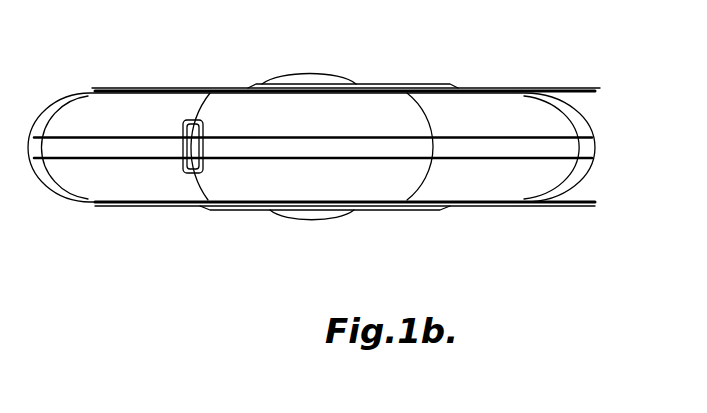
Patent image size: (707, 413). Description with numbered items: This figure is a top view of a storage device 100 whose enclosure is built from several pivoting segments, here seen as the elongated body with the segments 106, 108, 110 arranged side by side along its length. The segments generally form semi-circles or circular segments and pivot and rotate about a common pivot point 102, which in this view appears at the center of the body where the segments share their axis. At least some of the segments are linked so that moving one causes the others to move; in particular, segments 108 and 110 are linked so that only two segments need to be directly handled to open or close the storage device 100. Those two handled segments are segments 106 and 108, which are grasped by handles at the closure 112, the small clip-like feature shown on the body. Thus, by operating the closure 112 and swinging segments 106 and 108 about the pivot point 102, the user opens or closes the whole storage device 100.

The storage device 100 is at (205, 255).
The common pivot point 102 is at (310, 222).
The segment 106 is at (125, 180).
The segment 108 is at (375, 183).
The segment 110 is at (493, 178).
The closure 112 is at (182, 128).